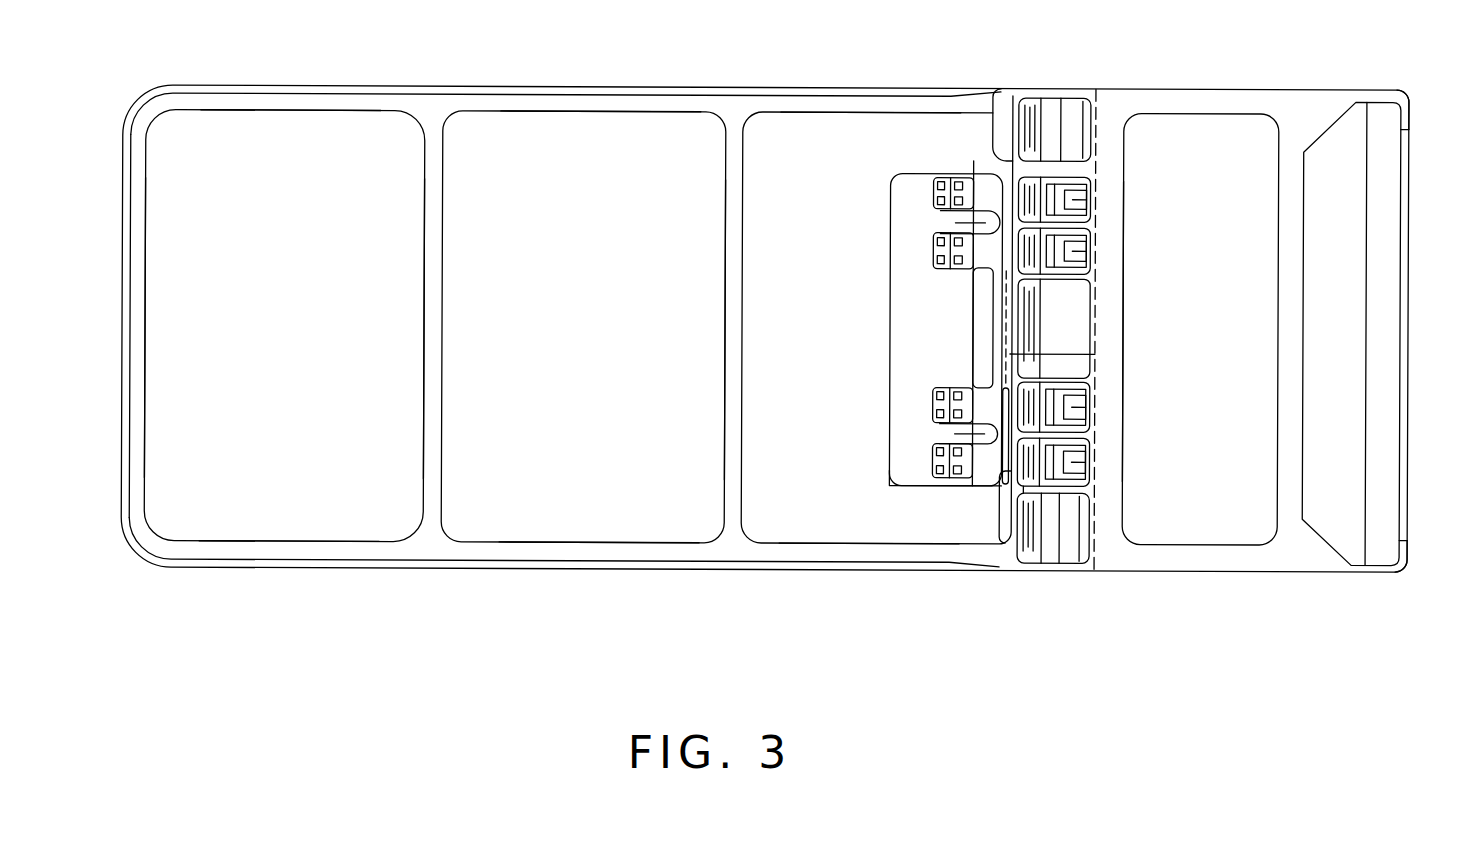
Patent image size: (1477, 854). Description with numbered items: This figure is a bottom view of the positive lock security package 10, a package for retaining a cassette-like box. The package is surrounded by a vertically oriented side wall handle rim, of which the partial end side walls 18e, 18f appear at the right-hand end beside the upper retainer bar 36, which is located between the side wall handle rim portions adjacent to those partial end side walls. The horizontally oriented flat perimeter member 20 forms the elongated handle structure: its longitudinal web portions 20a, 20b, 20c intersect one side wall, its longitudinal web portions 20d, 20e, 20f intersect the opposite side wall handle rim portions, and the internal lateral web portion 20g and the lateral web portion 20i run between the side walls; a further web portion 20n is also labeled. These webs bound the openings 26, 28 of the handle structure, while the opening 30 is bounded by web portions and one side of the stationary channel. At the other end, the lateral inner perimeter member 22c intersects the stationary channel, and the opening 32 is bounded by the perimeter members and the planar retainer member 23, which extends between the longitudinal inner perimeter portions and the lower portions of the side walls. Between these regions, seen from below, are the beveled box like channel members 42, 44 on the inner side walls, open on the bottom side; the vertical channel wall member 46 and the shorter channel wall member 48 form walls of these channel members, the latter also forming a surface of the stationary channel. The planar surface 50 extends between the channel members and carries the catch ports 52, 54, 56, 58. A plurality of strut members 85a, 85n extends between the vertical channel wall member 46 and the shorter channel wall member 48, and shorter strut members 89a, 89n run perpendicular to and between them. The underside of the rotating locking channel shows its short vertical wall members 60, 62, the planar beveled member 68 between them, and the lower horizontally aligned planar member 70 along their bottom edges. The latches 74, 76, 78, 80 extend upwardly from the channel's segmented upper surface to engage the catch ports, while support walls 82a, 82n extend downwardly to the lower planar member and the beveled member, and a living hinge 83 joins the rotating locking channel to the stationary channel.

The positive lock security package 10 is at (537, 593).
The partial end side wall 18e is at (1408, 552).
The partial end side wall 18f is at (1409, 113).
The horizontally oriented flat perimeter member 20 is at (150, 384).
The longitudinal web portion 20a is at (272, 548).
The longitudinal web portion 20b is at (586, 548).
The longitudinal web portion 20c is at (777, 548).
The longitudinal web portion 20d is at (306, 103).
The longitudinal web portion 20e is at (620, 99).
The longitudinal web portion 20f is at (812, 101).
The internal lateral web portion 20g is at (140, 276).
The lateral web portion 20i is at (727, 259).
The partition wall 20n is at (425, 233).
The lateral inner perimeter member 22c is at (1125, 247).
The planar retainer member 23 is at (1308, 330).
The opening 26 is at (290, 331).
The opening 28 is at (573, 331).
The opening 30 is at (768, 358).
The opening 32 is at (1208, 331).
The upper retainer bar 36 is at (1398, 338).
The beveled box like channel member 42 is at (1040, 555).
The beveled box like channel member 44 is at (1050, 108).
The vertical channel wall member 46 is at (1108, 334).
The shorter channel wall member 48 is at (1000, 88).
The planar surface 50 is at (1075, 300).
The catch port 52 is at (1090, 178).
The catch port 54 is at (1090, 233).
The catch port 56 is at (1090, 405).
The catch port 58 is at (1060, 465).
The short vertical wall member 60 is at (968, 485).
The short vertical wall member 62 is at (920, 172).
The planar beveled member 68 is at (980, 226).
The lower horizontally aligned planar member 70 is at (895, 482).
The latch 74 is at (957, 174).
The latch 76 is at (940, 248).
The latch 78 is at (937, 402).
The latch 80 is at (958, 485).
The support wall 82a is at (942, 223).
The support wall 82n is at (950, 437).
The living hinge 83 is at (1095, 355).
The strut member 85a is at (1078, 160).
The strut member 85n is at (1077, 562).
The shorter strut member 89a is at (1040, 166).
The shorter strut member 89n is at (1030, 492).